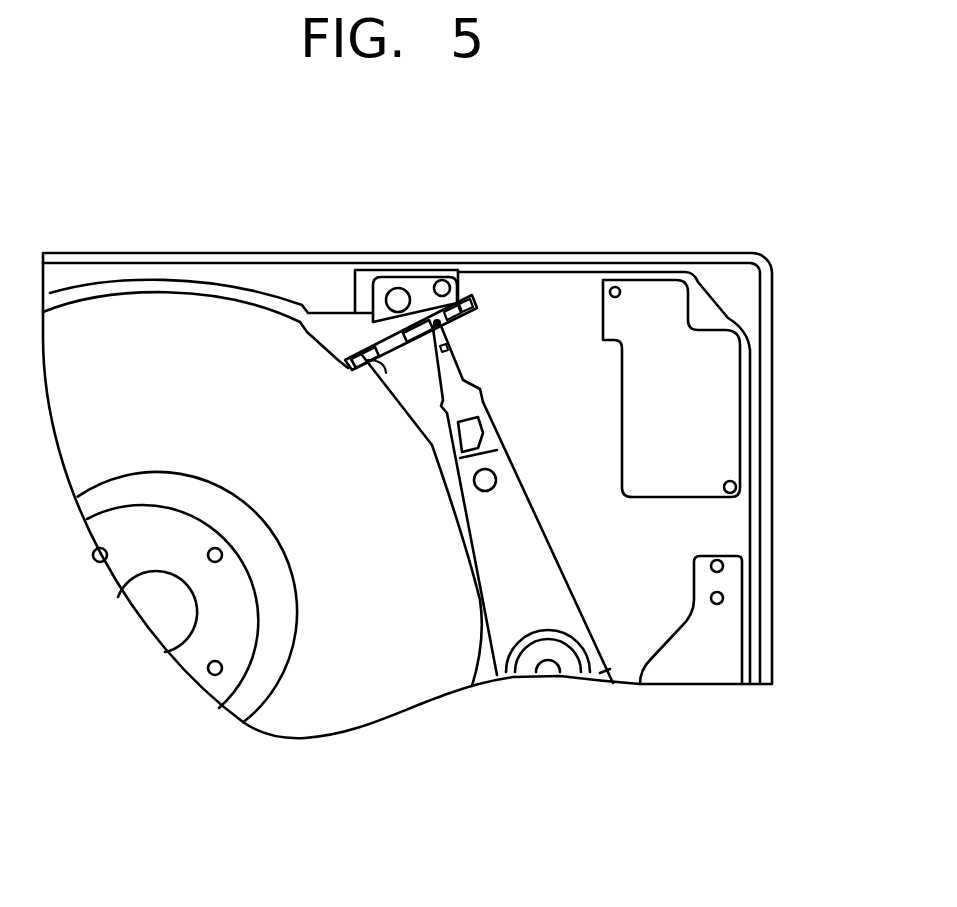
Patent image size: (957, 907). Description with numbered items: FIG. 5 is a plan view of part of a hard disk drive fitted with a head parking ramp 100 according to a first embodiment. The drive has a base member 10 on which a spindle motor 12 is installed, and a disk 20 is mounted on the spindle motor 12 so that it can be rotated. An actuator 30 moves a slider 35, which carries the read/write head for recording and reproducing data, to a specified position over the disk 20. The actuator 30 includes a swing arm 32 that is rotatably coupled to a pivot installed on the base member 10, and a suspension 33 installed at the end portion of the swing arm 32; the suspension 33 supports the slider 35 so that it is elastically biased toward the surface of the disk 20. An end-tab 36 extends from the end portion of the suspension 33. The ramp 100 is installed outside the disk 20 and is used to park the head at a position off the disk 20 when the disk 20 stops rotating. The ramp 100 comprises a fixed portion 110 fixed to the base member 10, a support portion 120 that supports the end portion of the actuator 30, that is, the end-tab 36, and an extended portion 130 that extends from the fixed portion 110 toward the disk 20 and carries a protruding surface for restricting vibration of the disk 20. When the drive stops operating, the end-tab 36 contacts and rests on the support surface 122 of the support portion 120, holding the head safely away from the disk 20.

The base member 10 is at (623, 253).
The spindle motor 12 is at (187, 670).
The disk 20 is at (393, 702).
The actuator 30 is at (606, 597).
The swing arm 32 is at (541, 554).
The suspension 33 is at (462, 381).
The slider 35 is at (452, 350).
The end-tab 36 is at (450, 328).
The head parking ramp 100 is at (365, 298).
The fixed portion 110 is at (426, 277).
The support portion 120 is at (368, 366).
The support surface 122 is at (387, 375).
The extended portion 130 is at (333, 333).